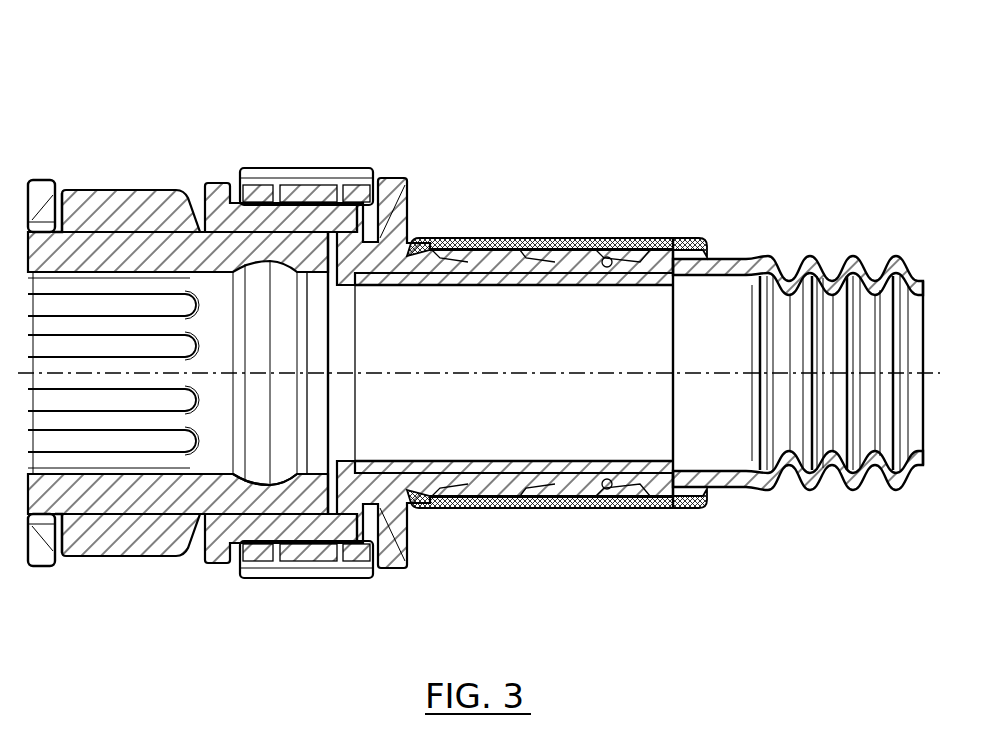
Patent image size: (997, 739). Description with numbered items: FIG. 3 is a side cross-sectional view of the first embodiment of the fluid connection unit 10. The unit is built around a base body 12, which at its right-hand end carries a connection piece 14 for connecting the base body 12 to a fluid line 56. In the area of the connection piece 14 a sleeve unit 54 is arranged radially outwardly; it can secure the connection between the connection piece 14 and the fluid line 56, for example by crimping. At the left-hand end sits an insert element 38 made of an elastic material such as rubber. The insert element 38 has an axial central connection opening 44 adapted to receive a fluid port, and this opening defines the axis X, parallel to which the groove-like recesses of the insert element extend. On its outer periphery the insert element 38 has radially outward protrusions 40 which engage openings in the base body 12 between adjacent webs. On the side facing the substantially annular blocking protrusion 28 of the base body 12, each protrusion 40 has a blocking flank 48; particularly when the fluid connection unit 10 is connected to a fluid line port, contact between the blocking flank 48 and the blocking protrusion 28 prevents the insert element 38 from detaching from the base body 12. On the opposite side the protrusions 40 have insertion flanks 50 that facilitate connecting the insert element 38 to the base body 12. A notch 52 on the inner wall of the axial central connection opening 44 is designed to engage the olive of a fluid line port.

The fluid connection unit 10 is at (543, 103).
The base body 12 is at (390, 205).
The connection piece 14 is at (655, 284).
The blocking protrusion 28 is at (40, 197).
The insert element 38 is at (246, 231).
The protrusions 40 is at (135, 205).
The axial central connection opening 44 is at (197, 397).
The blocking flank 48 is at (65, 195).
The insertion flanks 50 is at (183, 220).
The notch 52 is at (260, 470).
The sleeve unit 54 is at (603, 238).
The fluid line 56 is at (812, 258).
The axis X is at (515, 375).